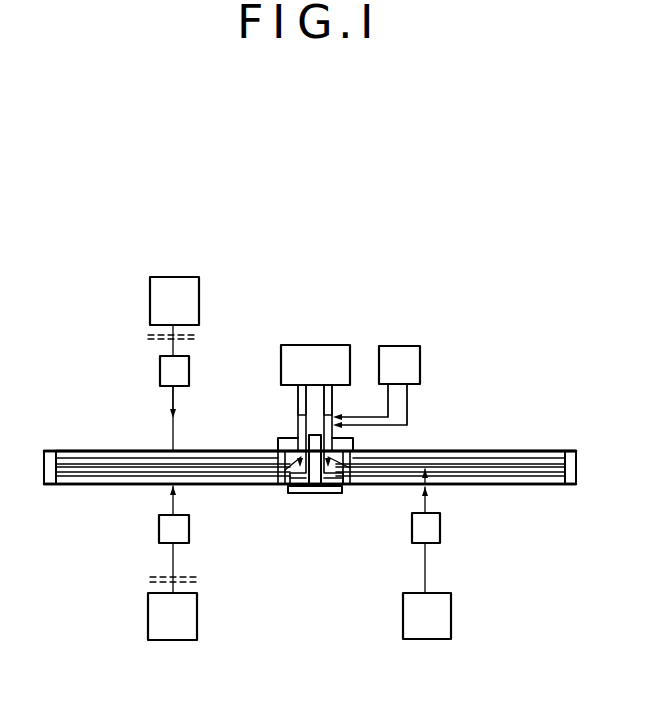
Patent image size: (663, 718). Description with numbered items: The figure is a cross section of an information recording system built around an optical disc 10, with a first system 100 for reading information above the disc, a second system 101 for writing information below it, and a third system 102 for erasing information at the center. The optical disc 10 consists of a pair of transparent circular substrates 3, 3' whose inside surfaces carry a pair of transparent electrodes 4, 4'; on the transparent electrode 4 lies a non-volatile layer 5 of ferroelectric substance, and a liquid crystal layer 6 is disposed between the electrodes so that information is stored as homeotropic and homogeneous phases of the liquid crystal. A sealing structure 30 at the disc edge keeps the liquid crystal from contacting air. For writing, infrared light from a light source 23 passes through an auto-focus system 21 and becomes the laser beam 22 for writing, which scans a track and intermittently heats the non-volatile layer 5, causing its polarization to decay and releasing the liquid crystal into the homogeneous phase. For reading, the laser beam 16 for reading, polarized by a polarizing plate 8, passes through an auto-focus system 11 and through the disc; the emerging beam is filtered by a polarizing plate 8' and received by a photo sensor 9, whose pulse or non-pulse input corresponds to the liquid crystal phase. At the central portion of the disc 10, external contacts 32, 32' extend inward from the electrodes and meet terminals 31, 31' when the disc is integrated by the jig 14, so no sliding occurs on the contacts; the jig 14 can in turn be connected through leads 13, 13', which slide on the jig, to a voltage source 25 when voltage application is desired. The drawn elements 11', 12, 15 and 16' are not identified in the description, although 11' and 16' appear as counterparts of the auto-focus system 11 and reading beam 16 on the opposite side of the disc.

The transparent circular substrate 3 is at (310, 418).
The transparent electrode 4 is at (310, 416).
The non-volatile layer 5 is at (473, 470).
The liquid crystal layer 6 is at (498, 463).
The transparent electrode 4' is at (310, 407).
The transparent circular substrate 3' is at (321, 404).
The polarizing plate 8 is at (151, 586).
The polarizing plate 8' is at (147, 337).
The photo sensor 9 is at (157, 298).
The optical disc 10 is at (590, 361).
The auto-focus system 11 is at (142, 539).
The lens 11' is at (137, 372).
The photodetector 12 is at (152, 622).
The lead 13 is at (330, 366).
The lead 13' is at (363, 366).
The jig 14 is at (300, 440).
The motor 15 is at (300, 352).
The laser beam for reading 16 is at (135, 502).
The light beam 16' is at (137, 418).
The auto-focus system 21 is at (437, 528).
The laser beam for writing 22 is at (428, 490).
The light source 23 is at (442, 627).
The voltage source 25 is at (405, 350).
The sealing structure 30 is at (572, 486).
The terminal 31 is at (379, 496).
The terminal 31' is at (262, 496).
The external contact 32 is at (352, 509).
The external contact 32' is at (293, 509).
The first system 100 is at (215, 246).
The second system 101 is at (488, 635).
The third system 102 is at (416, 244).